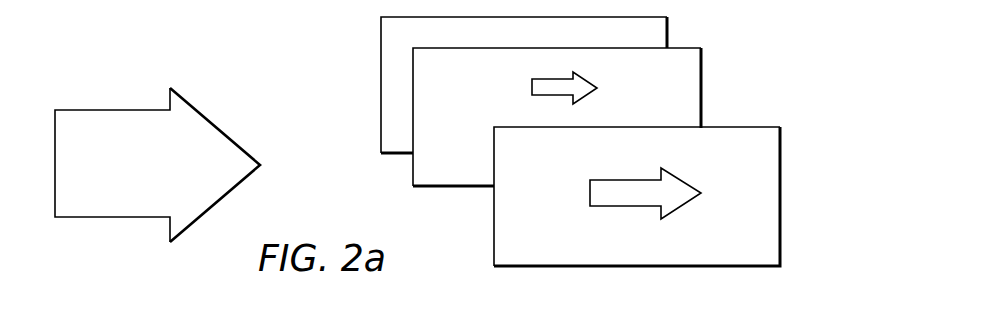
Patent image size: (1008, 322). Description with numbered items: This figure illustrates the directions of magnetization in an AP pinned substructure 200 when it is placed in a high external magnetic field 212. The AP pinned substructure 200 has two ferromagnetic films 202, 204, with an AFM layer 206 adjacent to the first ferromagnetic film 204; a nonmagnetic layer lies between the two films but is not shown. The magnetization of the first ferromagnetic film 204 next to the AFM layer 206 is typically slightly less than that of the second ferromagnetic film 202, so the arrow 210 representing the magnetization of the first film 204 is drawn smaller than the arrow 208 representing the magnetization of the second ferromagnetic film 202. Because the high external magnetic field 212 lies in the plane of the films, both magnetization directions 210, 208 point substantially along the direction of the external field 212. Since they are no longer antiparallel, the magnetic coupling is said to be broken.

The AP pinned substructure 200 is at (824, 125).
The second ferromagnetic film 202 is at (781, 243).
The first ferromagnetic film 204 is at (702, 89).
The AFM layer 206 is at (668, 30).
The arrow representing magnetization of second ferromagnetic film 208 is at (625, 207).
The arrow representing magnetization of first ferromagnetic film 210 is at (531, 89).
The high external magnetic field 212 is at (116, 110).